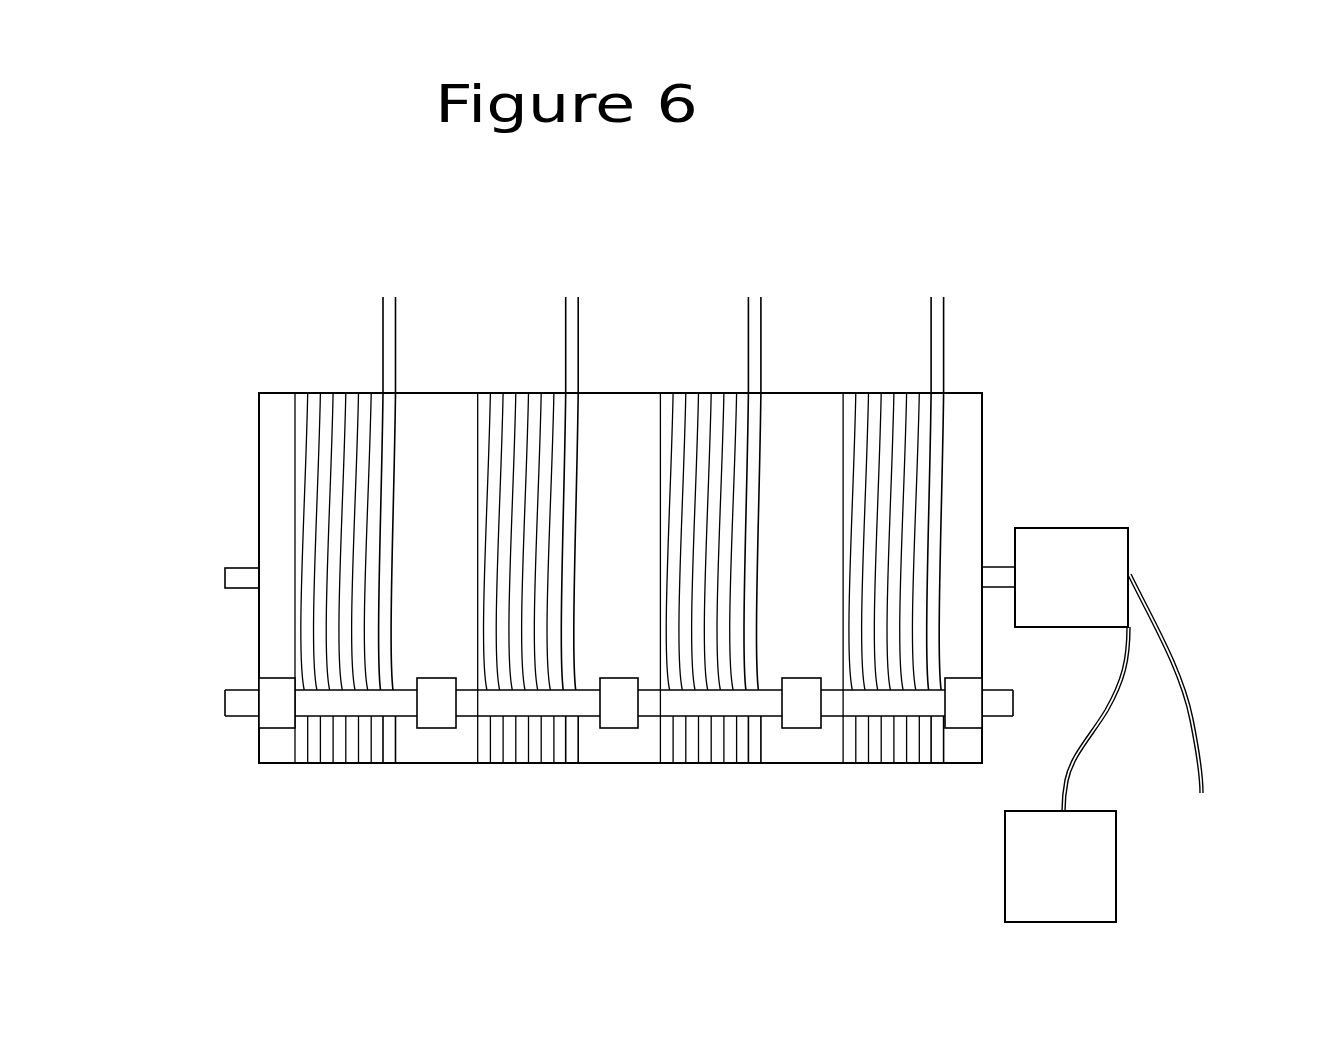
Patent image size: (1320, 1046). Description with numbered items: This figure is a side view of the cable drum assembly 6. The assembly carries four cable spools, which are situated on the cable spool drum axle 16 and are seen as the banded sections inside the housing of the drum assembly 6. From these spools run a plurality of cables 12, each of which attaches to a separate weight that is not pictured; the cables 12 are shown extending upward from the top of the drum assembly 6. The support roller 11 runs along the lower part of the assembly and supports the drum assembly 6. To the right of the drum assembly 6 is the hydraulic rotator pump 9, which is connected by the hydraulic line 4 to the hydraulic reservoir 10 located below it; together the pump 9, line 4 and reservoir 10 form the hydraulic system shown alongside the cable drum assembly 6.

The hydraulic line 4 is at (1092, 762).
The cable drum assembly 6 is at (230, 419).
The hydraulic rotator pump 9 is at (1076, 519).
The hydraulic reservoir 10 is at (1128, 868).
The support roller 11 is at (218, 720).
The cables 12 is at (362, 335).
The cable spool drum axle 16 is at (218, 592).